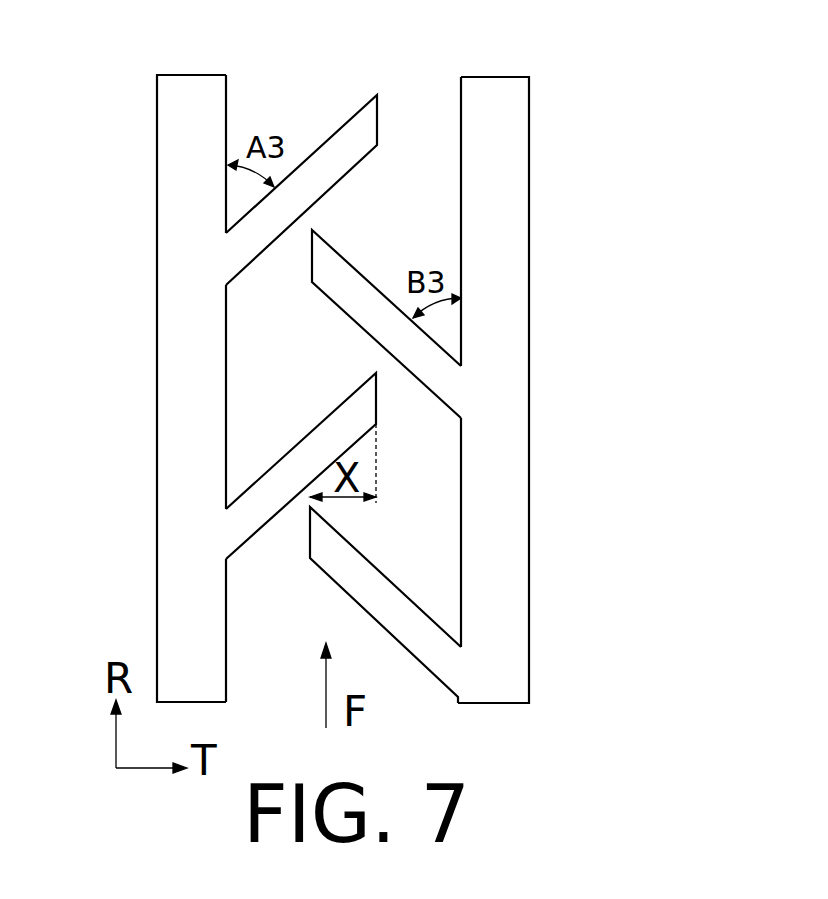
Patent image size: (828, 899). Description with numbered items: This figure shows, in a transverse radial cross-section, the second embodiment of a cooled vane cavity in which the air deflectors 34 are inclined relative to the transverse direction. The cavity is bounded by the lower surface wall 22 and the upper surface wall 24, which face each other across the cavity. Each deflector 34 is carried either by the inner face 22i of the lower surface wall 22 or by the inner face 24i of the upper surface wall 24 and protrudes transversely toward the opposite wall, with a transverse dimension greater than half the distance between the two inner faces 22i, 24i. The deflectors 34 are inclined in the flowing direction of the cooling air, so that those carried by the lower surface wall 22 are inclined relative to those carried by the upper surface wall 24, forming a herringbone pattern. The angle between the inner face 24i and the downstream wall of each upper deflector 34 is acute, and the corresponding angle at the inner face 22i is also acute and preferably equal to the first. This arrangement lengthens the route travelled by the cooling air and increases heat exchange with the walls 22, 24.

The lower surface wall 22 is at (512, 85).
The inner face of the lower surface wall 22i is at (462, 110).
The upper surface wall 24 is at (173, 98).
The inner face of the upper surface wall 24i is at (228, 97).
The air deflector 34 is at (243, 240).